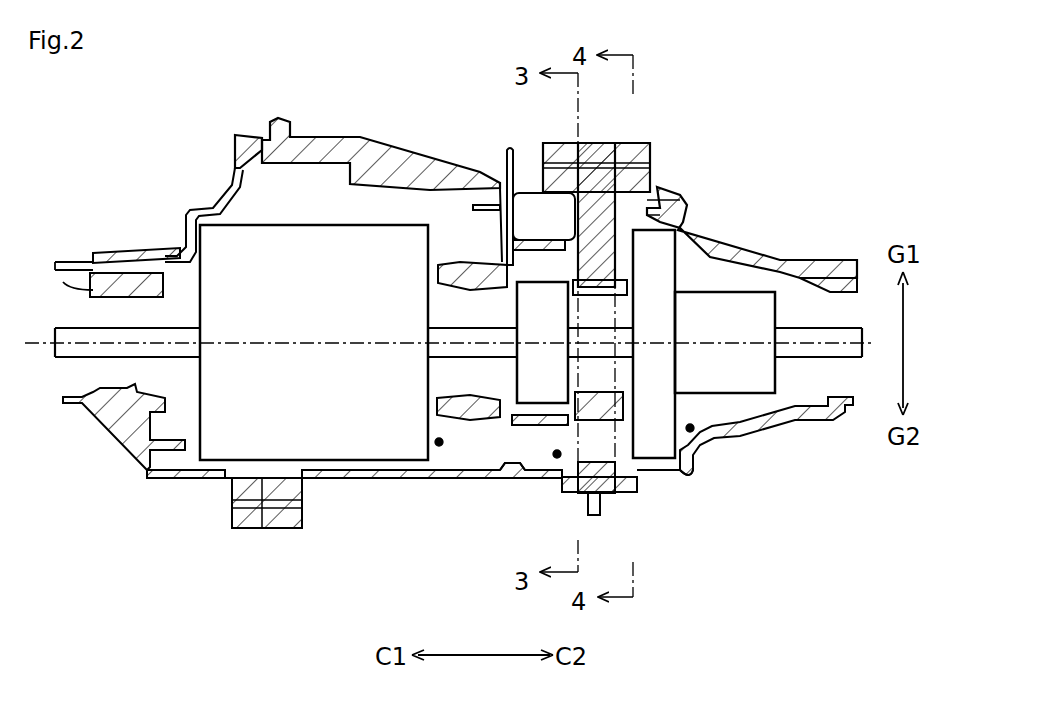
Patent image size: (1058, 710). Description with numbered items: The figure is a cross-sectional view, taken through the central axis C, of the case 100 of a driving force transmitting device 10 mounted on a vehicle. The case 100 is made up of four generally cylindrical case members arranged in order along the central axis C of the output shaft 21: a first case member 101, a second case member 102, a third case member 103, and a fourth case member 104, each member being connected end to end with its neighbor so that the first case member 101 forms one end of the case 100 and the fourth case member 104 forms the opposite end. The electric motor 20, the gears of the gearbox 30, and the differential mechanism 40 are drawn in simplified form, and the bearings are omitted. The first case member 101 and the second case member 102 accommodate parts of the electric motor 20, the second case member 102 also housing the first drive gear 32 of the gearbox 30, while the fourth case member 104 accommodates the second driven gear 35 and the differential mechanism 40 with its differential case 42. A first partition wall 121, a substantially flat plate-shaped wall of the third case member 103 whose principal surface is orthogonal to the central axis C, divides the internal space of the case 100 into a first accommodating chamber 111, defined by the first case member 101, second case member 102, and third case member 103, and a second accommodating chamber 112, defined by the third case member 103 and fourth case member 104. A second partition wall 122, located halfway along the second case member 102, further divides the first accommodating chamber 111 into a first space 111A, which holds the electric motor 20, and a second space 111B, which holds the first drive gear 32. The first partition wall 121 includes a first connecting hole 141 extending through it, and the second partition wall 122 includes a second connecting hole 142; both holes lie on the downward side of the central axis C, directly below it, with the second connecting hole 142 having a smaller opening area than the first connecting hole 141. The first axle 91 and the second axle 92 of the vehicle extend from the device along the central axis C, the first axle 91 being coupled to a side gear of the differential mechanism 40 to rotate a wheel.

The driving force transmitting device 10 is at (117, 110).
The case 100 is at (189, 120).
The first case member 101 is at (238, 135).
The second case member 102 is at (436, 158).
The third case member 103 is at (600, 142).
The fourth case member 104 is at (722, 240).
The electric motor 20 is at (285, 218).
The output shaft 21 is at (445, 320).
The gearbox 30 is at (493, 253).
The first drive gear 32 is at (515, 375).
The second driven gear 35 is at (676, 413).
The differential mechanism 40 is at (778, 280).
The differential case 42 is at (757, 290).
The first axle 91 is at (108, 325).
The second axle 92 is at (812, 310).
The first accommodating chamber 111 is at (487, 540).
The first space 111A is at (440, 446).
The second space 111B is at (556, 458).
The second accommodating chamber 112 is at (697, 452).
The first partition wall 121 is at (650, 183).
The second partition wall 122 is at (510, 467).
The first connecting hole 141 is at (610, 443).
The second connecting hole 142 is at (510, 447).
The central axis C is at (36, 340).